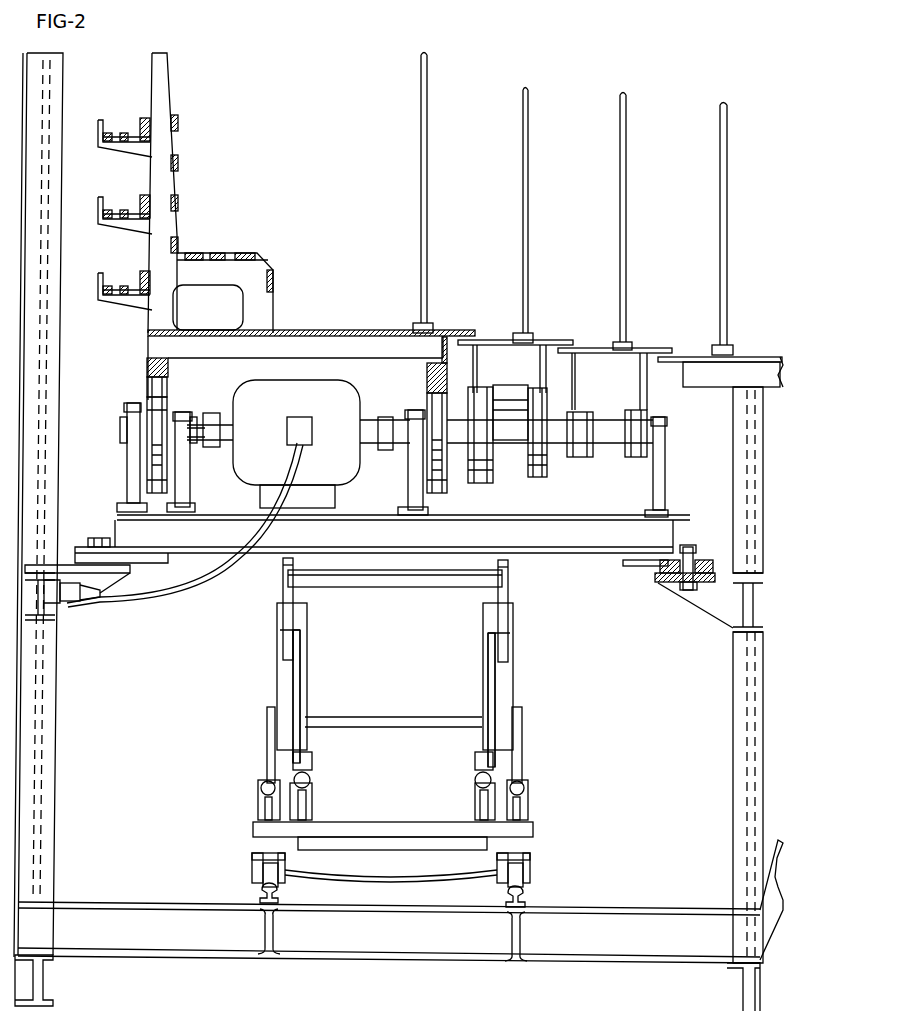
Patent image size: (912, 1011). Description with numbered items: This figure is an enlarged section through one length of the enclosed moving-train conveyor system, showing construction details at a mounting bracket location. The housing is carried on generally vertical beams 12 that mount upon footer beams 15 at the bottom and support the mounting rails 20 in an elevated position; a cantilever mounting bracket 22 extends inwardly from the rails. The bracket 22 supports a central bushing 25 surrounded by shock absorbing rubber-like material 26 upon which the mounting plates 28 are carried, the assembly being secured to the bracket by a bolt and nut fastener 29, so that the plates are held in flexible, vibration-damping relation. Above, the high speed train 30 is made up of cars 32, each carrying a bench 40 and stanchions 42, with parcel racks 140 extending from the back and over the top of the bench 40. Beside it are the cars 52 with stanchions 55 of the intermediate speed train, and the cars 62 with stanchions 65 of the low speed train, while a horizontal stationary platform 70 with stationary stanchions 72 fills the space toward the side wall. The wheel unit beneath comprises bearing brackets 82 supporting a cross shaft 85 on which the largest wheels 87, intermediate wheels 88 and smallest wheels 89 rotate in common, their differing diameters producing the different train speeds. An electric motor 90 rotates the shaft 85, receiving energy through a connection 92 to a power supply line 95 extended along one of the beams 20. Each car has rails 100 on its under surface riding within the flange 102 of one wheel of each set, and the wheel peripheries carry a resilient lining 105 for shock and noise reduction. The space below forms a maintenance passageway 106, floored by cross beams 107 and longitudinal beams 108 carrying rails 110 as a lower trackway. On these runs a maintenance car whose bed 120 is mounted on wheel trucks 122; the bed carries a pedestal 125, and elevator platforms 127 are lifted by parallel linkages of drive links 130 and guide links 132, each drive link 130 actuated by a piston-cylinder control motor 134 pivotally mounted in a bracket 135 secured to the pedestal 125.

The vertical beam 12 is at (50, 688).
The footer beam 15 is at (38, 975).
The mounting rail 20 is at (357, 567).
The mounting bracket 22 is at (708, 598).
The central bushing 25 is at (694, 550).
The shock absorbing rubber-like material 26 is at (663, 571).
The mounting plate 28 is at (635, 564).
The bolt and nut fastener 29 is at (682, 583).
The high speed train 30 is at (321, 262).
The car 32 is at (307, 330).
The bench 40 is at (217, 235).
The stanchion 42 is at (428, 155).
The car 52 is at (497, 345).
The stanchion 55 is at (529, 155).
The car 62 is at (597, 353).
The stanchion 65 is at (627, 155).
The stationary platform 70 is at (705, 360).
The stationary stanchion 72 is at (728, 152).
The bearing bracket 82 is at (130, 455).
The cross shaft 85 is at (510, 445).
The largest wheels 87 is at (150, 477).
The intermediate wheels 88 is at (480, 480).
The smallest wheels 89 is at (632, 458).
The electric motor 90 is at (342, 463).
The connection 92 is at (183, 588).
The power supply line 95 is at (56, 606).
The rail 100 is at (150, 338).
The flange 102 is at (170, 362).
The resilient lining 105 is at (147, 373).
The lower frame 106 is at (646, 731).
The cross beam 107 is at (185, 938).
The longitudinally extending beam 108 is at (268, 950).
The rail 110 is at (258, 898).
The bed 120 is at (375, 868).
The wheel truck 122 is at (250, 868).
The pedestal 125 is at (270, 748).
The elevator platform 127 is at (507, 585).
The drive link 130 is at (277, 615).
The guide link 132 is at (281, 672).
The elevator control motor 134 is at (266, 790).
The bracket 135 is at (263, 808).
The rack 140 is at (120, 122).